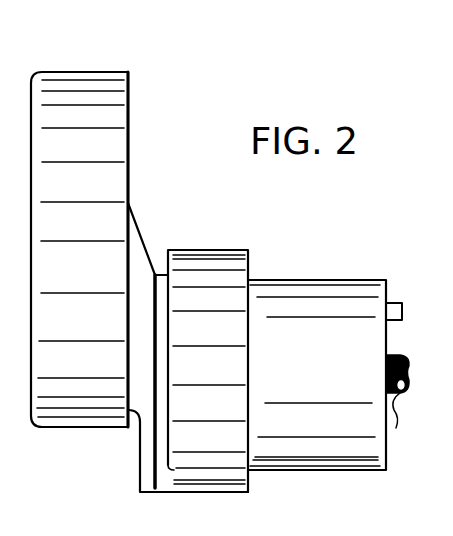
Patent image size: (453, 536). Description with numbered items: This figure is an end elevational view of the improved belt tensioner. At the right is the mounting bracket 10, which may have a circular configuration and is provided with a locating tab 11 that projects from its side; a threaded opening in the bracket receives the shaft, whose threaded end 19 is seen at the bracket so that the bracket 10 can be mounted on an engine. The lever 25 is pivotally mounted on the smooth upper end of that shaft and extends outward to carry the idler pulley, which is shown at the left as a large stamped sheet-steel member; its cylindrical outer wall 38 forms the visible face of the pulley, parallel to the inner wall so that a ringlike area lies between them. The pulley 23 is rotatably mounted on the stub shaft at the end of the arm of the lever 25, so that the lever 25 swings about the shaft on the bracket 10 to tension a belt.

The wheel 23 is at (95, 72).
The cylindrical outer wall 38 is at (118, 145).
The lever 25 is at (146, 242).
The mounting bracket 10 is at (283, 278).
The locating tab 11 is at (395, 302).
The threaded end 19 is at (405, 399).